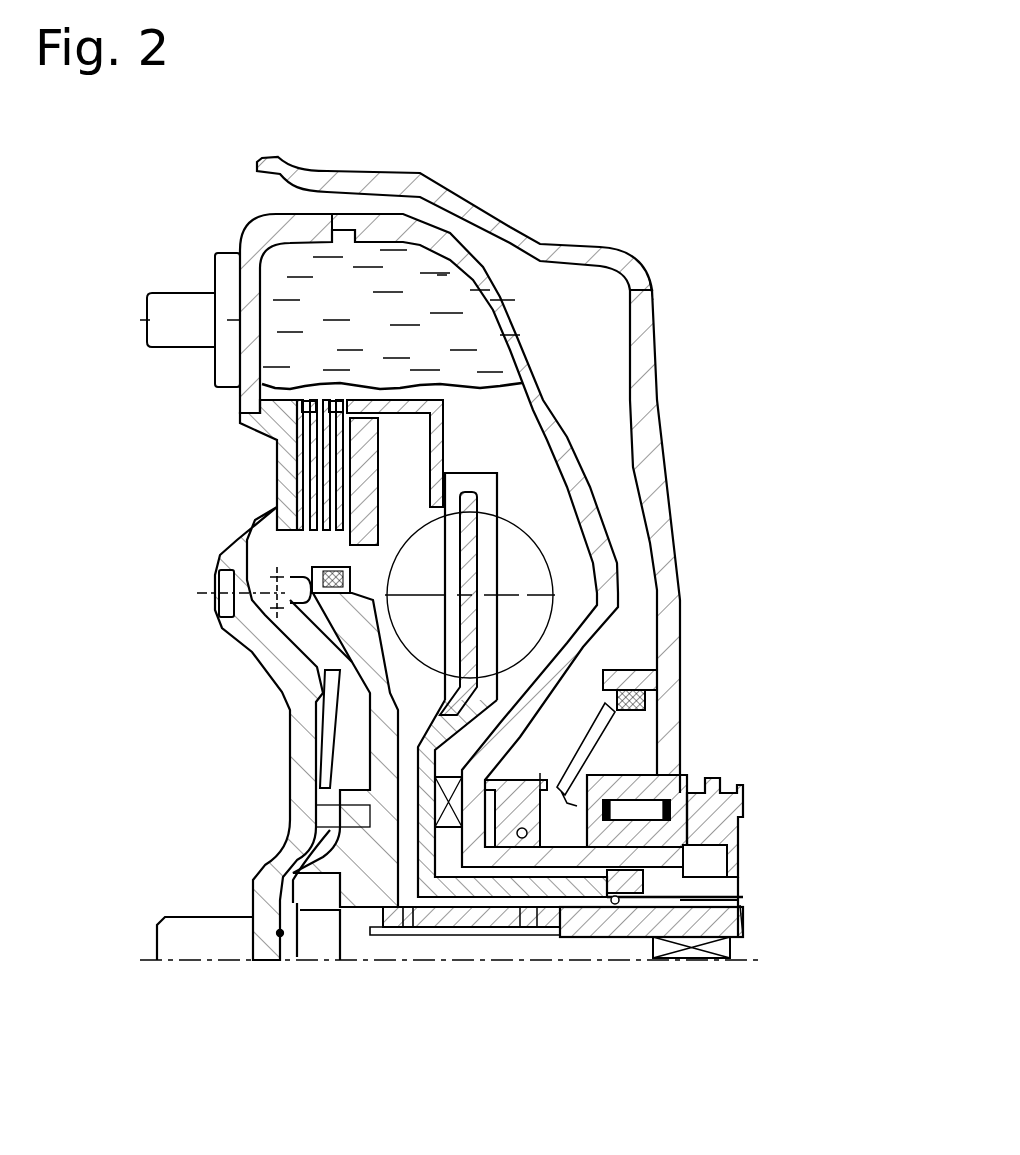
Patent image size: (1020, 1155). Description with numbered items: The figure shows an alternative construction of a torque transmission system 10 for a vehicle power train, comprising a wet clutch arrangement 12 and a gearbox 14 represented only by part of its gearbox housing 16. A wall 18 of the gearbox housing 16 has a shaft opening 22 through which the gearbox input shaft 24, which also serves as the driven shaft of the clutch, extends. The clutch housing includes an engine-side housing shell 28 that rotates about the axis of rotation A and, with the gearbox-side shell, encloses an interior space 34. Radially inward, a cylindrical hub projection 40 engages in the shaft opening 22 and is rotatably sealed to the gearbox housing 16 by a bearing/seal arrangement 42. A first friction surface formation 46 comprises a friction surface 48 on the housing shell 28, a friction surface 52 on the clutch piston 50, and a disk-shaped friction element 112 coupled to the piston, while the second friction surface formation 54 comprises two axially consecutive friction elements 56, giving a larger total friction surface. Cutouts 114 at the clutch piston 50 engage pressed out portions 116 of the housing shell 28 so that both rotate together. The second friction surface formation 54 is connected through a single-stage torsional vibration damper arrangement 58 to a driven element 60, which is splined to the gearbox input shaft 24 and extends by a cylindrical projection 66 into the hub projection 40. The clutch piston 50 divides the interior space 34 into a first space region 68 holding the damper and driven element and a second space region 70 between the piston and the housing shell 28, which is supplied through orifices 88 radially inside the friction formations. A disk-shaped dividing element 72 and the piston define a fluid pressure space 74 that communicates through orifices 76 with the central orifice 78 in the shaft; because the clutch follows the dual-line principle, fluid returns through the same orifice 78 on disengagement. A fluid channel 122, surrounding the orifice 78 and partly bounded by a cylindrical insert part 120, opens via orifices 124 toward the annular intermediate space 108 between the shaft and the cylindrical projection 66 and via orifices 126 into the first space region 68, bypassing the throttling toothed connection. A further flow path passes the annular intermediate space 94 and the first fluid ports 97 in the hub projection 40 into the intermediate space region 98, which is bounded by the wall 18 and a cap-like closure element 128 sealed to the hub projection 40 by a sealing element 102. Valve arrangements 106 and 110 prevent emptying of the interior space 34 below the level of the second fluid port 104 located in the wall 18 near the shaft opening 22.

The torque transmission system 10 is at (438, 125).
The wet clutch arrangement 12 is at (304, 157).
The gearbox 14 is at (637, 191).
The gearbox housing 16 is at (654, 288).
The wall 18 is at (658, 556).
The shaft opening 22 is at (743, 880).
The gearbox input shaft 24 is at (640, 920).
The engine-side housing shell 28 is at (290, 755).
The interior space 34 is at (565, 545).
The hub projection 40 is at (742, 825).
The bearing/seal arrangement 42 is at (645, 828).
The first friction surface formation 46 is at (247, 475).
The friction surface 48 is at (297, 447).
The clutch piston 50 is at (333, 673).
The friction surface 52 is at (300, 510).
The second friction surface formation 54 is at (285, 405).
The friction element 56 is at (333, 398).
The torsional vibration damper arrangement 58 is at (497, 450).
The driven element 60 is at (282, 847).
The cylindrical projection 66 is at (573, 880).
The first space region 68 is at (605, 268).
The second space region 70 is at (300, 637).
The dividing element 72 is at (360, 602).
The fluid pressure space 74 is at (377, 810).
The orifices 76 is at (335, 905).
The orifice 78 is at (520, 946).
The orifices 88 is at (503, 407).
The annular intermediate space 94 is at (550, 933).
The first fluid ports 97 is at (588, 900).
The intermediate space region 98 is at (640, 795).
The sealing element 102 is at (435, 930).
The second fluid port 104 is at (660, 690).
The valve arrangement 106 is at (735, 950).
The annular intermediate space 108 is at (583, 882).
The valve arrangement 110 is at (745, 905).
The disk-shaped friction element 112 is at (268, 583).
The cutouts 114 is at (297, 640).
The pressed out portions 116 is at (222, 592).
The cylindrical insert part 120 is at (398, 935).
The fluid channel 122 is at (337, 960).
The orifices 124 is at (505, 928).
The orifices 126 is at (372, 930).
The cap-like closure element 128 is at (582, 733).
The axis of rotation A is at (163, 963).